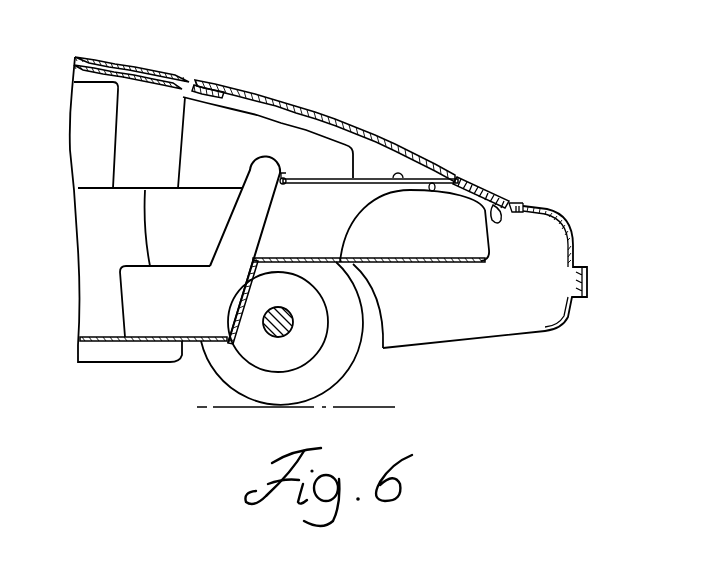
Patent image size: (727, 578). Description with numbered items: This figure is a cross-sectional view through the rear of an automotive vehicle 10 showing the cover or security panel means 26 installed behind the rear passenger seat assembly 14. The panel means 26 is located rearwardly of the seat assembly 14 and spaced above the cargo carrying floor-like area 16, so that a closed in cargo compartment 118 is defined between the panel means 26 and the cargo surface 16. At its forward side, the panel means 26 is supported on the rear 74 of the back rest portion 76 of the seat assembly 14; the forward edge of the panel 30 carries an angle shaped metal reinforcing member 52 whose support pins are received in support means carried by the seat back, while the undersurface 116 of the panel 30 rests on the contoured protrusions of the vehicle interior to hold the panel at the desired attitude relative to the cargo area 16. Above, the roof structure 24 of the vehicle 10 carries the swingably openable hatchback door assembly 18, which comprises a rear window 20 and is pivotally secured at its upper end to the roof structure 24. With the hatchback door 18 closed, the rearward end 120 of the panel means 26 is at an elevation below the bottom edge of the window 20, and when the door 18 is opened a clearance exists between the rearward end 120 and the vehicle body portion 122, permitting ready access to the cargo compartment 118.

The automotive vehicle 10 is at (81, 229).
The rear passenger seat assembly 14 is at (117, 300).
The cargo carrying floor-like area 16 is at (436, 257).
The hatchback door assembly 18 is at (494, 178).
The rear window 20 is at (313, 110).
The roof structure 24 is at (151, 68).
The cover or security panel means 26 is at (370, 177).
The panel 30 is at (393, 178).
The angle shaped metal reinforcing member 52 is at (280, 181).
The rear of the back rest portion 74 is at (261, 216).
The back rest portion 76 is at (251, 168).
The undersurface of panel 116 is at (431, 179).
The closed in cargo compartment 118 is at (342, 226).
The rearward end of panel means 120 is at (458, 174).
The vehicle body portion 122 is at (498, 230).